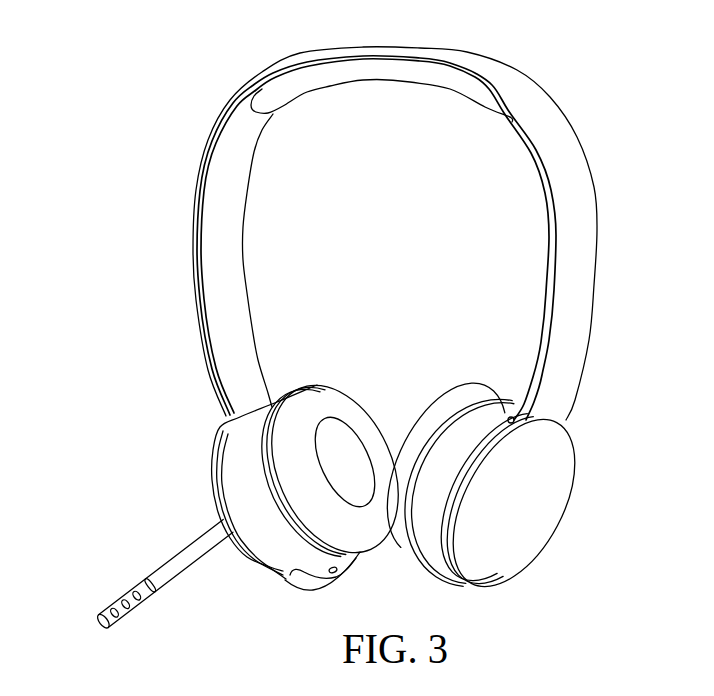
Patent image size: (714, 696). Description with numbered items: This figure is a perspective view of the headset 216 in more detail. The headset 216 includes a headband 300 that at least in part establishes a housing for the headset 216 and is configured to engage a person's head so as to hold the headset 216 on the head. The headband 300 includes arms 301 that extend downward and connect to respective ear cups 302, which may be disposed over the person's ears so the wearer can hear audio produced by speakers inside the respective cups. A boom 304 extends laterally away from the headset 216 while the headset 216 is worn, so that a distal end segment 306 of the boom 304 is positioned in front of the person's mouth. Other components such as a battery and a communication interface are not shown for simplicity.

The headset 216 is at (131, 42).
The headband 300 is at (248, 88).
The arms 301 is at (243, 216).
The ear cups 302 is at (314, 385).
The boom 304 is at (146, 546).
The distal end segment 306 is at (152, 604).